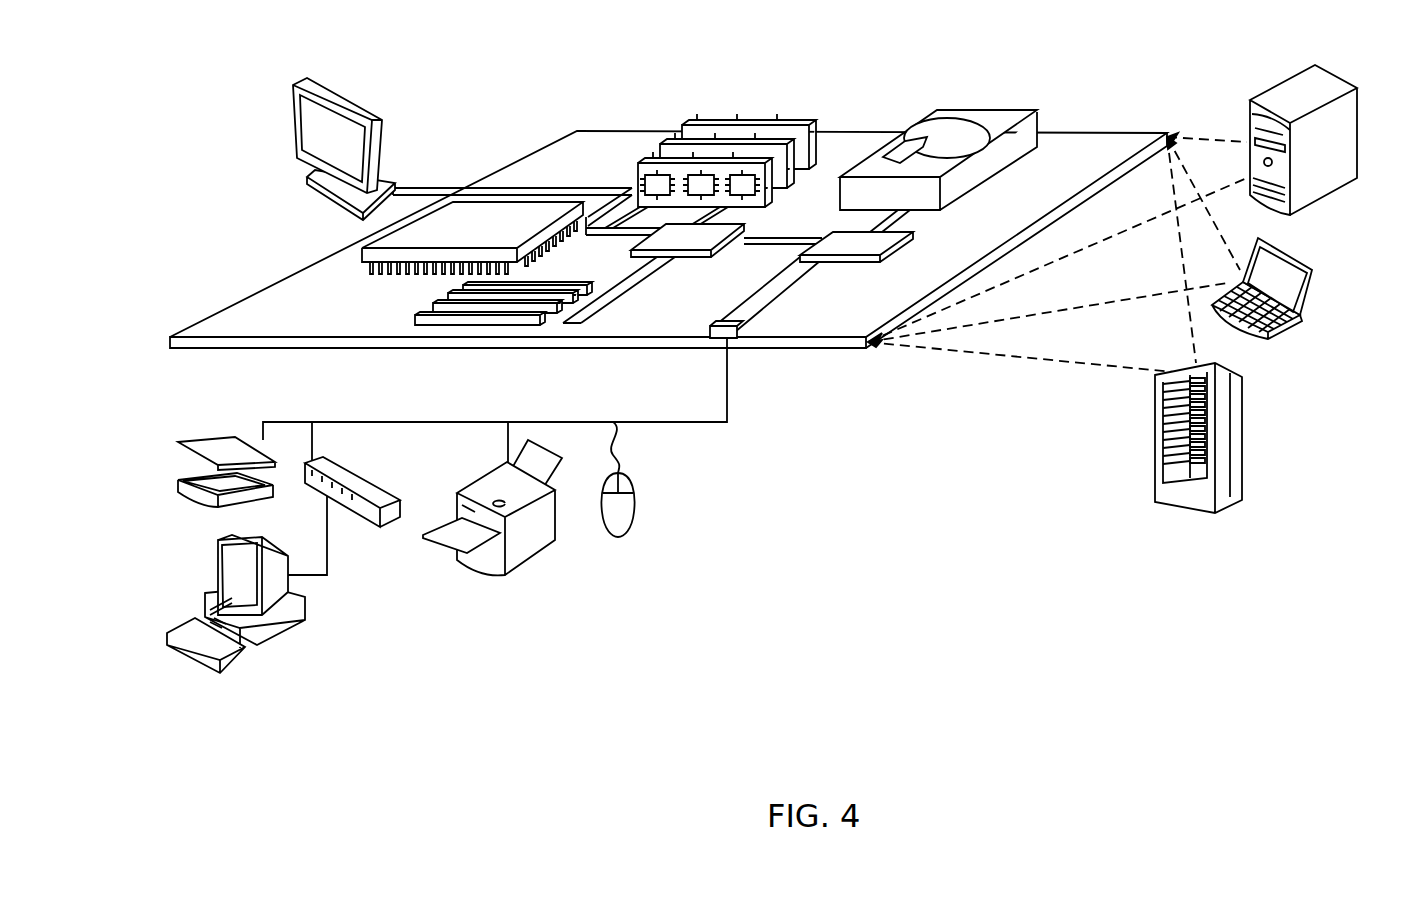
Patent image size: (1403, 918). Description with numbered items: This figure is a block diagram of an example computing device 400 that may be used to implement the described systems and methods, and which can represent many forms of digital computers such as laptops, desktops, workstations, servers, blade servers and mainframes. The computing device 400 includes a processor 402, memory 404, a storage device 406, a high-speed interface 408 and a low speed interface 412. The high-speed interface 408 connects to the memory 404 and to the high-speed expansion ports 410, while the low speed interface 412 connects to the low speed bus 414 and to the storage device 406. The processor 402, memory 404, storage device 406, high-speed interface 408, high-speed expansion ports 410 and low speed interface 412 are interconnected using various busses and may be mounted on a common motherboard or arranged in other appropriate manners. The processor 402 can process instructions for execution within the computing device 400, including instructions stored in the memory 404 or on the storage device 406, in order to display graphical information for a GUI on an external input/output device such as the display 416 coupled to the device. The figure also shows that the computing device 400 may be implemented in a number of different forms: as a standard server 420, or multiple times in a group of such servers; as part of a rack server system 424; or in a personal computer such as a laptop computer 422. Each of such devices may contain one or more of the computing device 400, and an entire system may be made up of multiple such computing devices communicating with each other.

The computing device 400 is at (490, 105).
The processor 402 is at (362, 252).
The memory 404 is at (700, 128).
The storage device 406 is at (935, 118).
The high-speed interface 408 is at (650, 233).
The high-speed expansion ports 410 is at (428, 308).
The low speed interface 412 is at (840, 238).
The low speed bus 414 is at (735, 338).
The display 416 is at (294, 84).
The standard server 420 is at (1252, 117).
The laptop computer 422 is at (1313, 268).
The rack server system 424 is at (1156, 458).